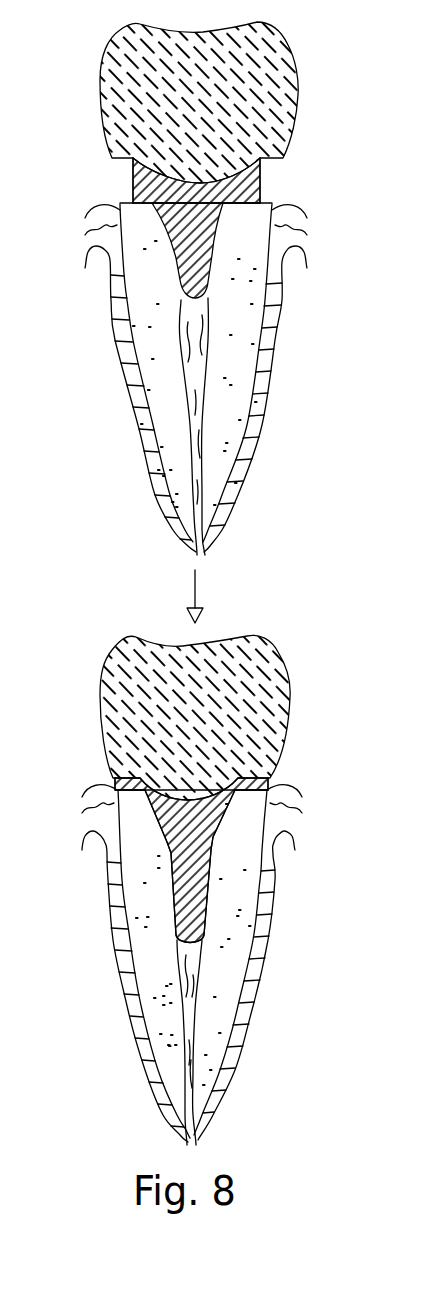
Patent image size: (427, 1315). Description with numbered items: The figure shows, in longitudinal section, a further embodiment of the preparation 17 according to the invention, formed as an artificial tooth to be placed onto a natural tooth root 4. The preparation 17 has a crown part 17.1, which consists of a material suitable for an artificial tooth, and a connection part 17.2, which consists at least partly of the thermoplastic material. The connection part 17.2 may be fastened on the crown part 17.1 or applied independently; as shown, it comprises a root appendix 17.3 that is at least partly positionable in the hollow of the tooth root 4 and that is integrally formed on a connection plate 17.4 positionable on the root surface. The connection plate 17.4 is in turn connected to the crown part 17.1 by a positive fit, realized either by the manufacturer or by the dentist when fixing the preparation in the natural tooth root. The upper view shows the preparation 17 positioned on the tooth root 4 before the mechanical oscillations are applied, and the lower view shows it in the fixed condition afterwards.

The preparation 17 is at (72, 101).
The crown part 17.1 is at (262, 116).
The connection part 17.2 is at (124, 176).
The root appendix 17.3 is at (197, 272).
The connection plate 17.4 is at (243, 182).
The natural tooth root 4 is at (109, 378).